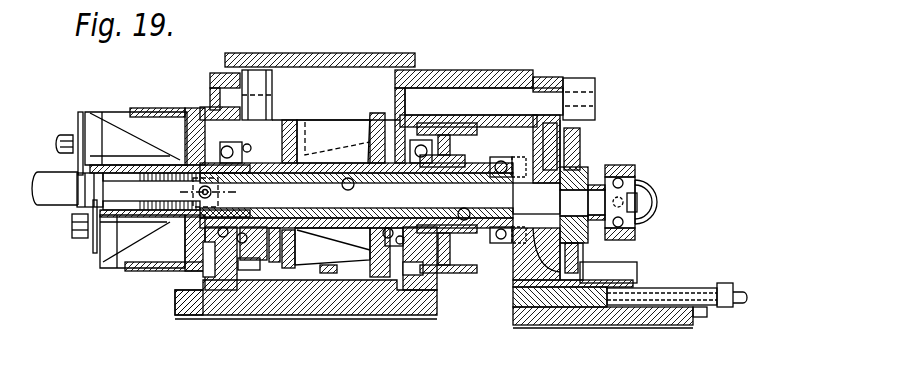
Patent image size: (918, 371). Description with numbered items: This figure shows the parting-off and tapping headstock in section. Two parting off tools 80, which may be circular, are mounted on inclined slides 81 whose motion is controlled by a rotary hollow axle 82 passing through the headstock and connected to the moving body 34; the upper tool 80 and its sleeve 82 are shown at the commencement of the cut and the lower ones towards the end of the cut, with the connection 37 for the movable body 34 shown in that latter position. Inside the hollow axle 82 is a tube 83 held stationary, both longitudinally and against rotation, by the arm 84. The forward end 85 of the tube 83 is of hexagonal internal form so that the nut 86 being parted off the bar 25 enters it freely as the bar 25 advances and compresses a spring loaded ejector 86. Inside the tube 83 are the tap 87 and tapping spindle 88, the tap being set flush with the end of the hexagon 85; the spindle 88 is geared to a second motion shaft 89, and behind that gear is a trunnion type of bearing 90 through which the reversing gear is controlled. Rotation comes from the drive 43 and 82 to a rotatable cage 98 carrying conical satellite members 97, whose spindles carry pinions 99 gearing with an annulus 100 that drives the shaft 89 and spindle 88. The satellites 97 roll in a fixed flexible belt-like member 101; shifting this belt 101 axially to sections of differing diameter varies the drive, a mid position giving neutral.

The bar 25 is at (88, 187).
The parting off tool 80 is at (80, 112).
The inclined slide 81 is at (118, 130).
The rotary hollow axle 82 is at (163, 170).
The forward end 85 is at (75, 135).
The nut 86 is at (88, 187).
The tap 87 is at (137, 177).
The annulus 100 is at (272, 120).
The conical satellite member 97 is at (308, 122).
The tube 83 is at (352, 178).
The rotatable cage 98 is at (402, 105).
The tapping spindle 88 is at (448, 192).
The second motion shaft 89 is at (545, 105).
The arm 84 is at (578, 143).
The trunnion type bearing 90 is at (650, 185).
The pinion 99 is at (277, 243).
The flexible belt-like member 101 is at (327, 273).
The pulley 43 is at (455, 273).
The moving body 34 is at (640, 312).
The connection 37 is at (633, 283).